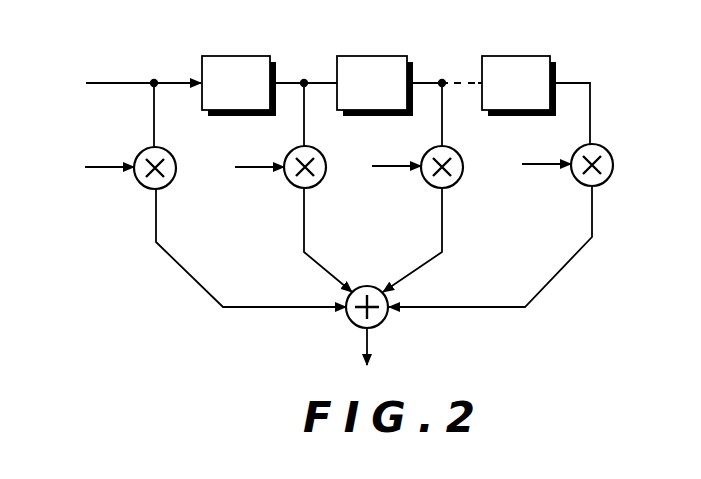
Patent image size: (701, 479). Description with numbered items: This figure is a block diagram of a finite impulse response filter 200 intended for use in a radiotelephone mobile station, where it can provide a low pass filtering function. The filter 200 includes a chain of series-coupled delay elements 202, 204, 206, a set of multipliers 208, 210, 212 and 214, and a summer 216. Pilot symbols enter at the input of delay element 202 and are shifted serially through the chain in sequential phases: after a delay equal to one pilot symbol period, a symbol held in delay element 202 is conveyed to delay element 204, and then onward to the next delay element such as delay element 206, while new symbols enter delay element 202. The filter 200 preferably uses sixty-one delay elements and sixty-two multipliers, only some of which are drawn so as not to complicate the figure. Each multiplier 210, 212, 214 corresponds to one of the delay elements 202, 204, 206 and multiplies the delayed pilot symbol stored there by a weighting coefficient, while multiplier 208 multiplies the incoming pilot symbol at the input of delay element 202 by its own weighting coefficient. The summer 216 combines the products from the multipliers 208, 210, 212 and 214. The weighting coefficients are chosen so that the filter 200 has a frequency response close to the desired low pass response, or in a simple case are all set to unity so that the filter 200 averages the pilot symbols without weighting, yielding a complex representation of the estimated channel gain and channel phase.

The finite impulse response (FIR) filter 200 is at (73, 336).
The delay element 202 is at (228, 56).
The delay element 204 is at (362, 56).
The delay element 206 is at (505, 56).
The multiplier 208 is at (140, 153).
The multiplier 210 is at (290, 181).
The multiplier 212 is at (427, 151).
The multiplier 214 is at (577, 150).
The summer 216 is at (350, 318).